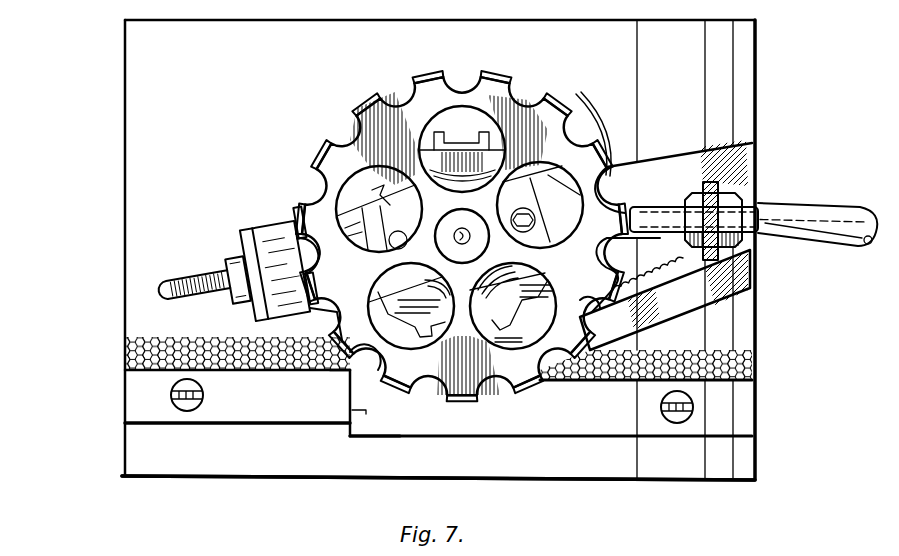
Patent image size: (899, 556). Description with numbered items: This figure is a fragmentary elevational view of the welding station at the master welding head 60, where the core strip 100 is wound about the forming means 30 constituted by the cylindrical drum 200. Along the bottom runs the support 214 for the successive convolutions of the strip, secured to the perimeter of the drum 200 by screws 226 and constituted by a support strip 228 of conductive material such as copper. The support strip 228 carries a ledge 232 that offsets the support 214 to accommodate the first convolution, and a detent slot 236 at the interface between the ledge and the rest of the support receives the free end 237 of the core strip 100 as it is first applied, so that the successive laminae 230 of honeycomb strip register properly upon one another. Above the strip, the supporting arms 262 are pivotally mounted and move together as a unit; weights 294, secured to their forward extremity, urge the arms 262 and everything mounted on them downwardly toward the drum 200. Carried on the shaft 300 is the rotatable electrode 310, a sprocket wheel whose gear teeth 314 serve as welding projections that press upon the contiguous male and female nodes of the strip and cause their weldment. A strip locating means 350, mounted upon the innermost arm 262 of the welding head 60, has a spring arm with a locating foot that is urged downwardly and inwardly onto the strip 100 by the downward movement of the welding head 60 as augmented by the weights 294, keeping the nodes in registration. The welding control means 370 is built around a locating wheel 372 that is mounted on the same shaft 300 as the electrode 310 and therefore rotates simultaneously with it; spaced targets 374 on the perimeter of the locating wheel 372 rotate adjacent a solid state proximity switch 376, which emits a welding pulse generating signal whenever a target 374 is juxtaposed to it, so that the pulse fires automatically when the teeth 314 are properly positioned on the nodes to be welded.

The drum 200 is at (150, 88).
The forming means 30 is at (120, 165).
The master welding head 60 is at (738, 107).
The core strip 100 is at (122, 350).
The support 214 is at (146, 410).
The screws 226 is at (171, 395).
The support strip 228 is at (239, 413).
The laminae 230 is at (150, 333).
The ledge 232 is at (343, 371).
The detent slot 236 is at (368, 411).
The free end 237 is at (355, 388).
The supporting arms 262 is at (745, 163).
The weights 294 is at (268, 233).
The shaft 300 is at (458, 234).
The rotatable electrode 310 is at (464, 143).
The gear teeth 314 is at (437, 140).
The strip locating means 350 is at (762, 270).
The welding control means 370 is at (462, 236).
The locating wheel 372 is at (497, 402).
The targets 374 is at (578, 95).
The proximity switch 376 is at (647, 223).